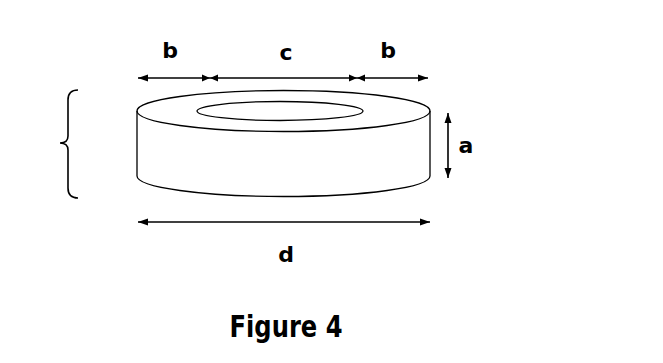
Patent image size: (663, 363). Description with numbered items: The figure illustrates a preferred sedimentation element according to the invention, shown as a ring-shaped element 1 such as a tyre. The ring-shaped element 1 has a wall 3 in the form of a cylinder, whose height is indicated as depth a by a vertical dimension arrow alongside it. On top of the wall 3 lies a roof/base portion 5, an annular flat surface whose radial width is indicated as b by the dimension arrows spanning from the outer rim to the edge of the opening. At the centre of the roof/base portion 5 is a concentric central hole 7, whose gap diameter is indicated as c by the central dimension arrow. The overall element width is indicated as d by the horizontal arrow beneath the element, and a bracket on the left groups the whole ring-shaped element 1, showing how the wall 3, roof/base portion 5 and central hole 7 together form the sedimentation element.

The ring-shaped element 1 is at (47, 144).
The wall 3 is at (397, 162).
The roof/base portion 5 is at (172, 112).
The concentric central hole 7 is at (302, 110).